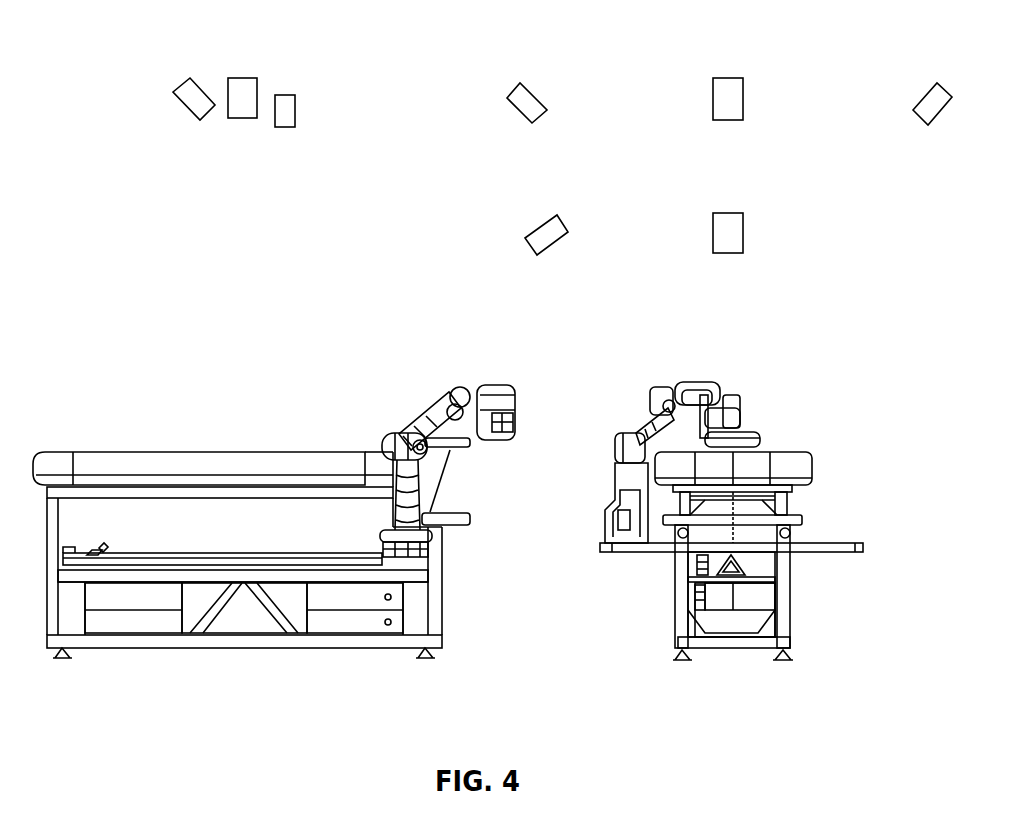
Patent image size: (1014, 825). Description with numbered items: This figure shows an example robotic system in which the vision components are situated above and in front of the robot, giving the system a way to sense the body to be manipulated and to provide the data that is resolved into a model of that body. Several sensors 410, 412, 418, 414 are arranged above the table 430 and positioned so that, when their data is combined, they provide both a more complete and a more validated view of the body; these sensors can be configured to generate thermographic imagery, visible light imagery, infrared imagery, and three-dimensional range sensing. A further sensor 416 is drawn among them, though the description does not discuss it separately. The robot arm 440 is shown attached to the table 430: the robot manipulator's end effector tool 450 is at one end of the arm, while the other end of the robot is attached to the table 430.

The sensor 410 is at (170, 94).
The sensor 412 is at (232, 75).
The sensor 414 is at (906, 94).
The workpiece object 416 is at (517, 236).
The sensor 418 is at (285, 93).
The table 430 is at (247, 440).
The robot arm 440 is at (385, 413).
The end effector tool 450 is at (500, 373).